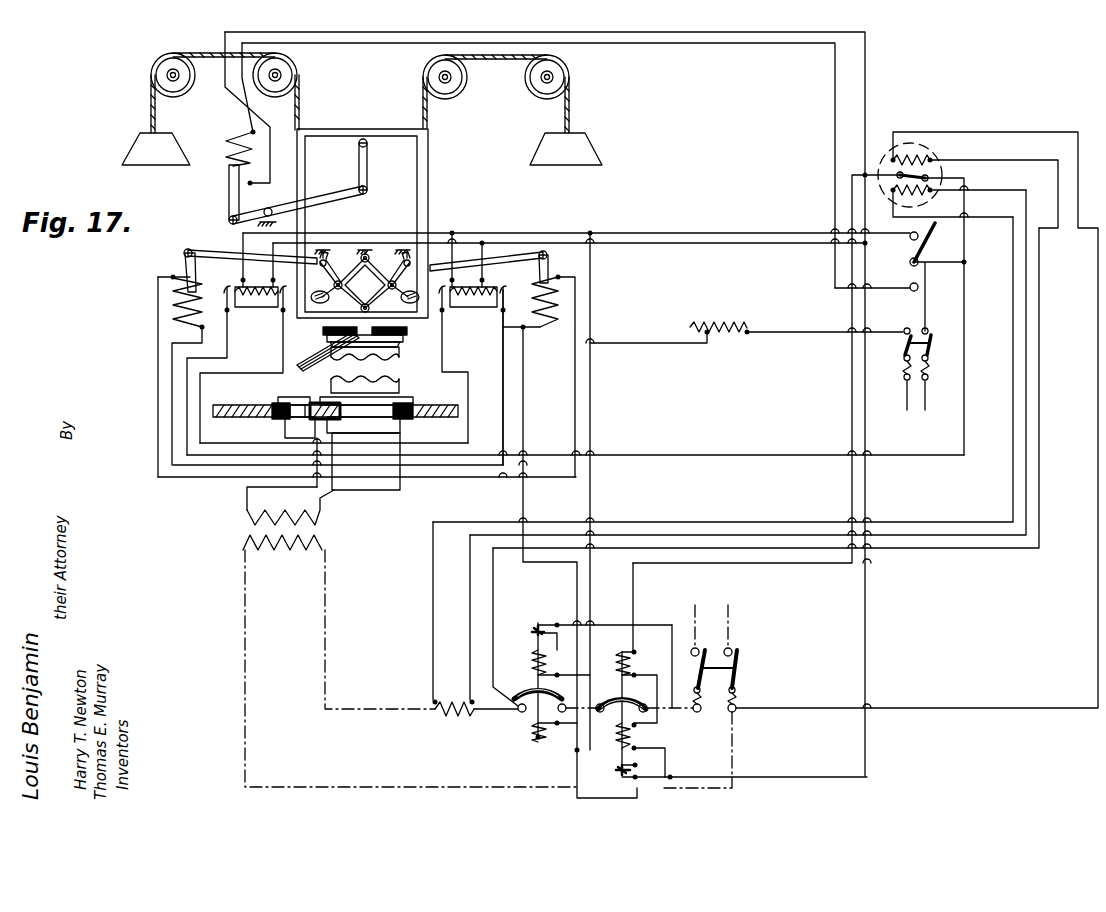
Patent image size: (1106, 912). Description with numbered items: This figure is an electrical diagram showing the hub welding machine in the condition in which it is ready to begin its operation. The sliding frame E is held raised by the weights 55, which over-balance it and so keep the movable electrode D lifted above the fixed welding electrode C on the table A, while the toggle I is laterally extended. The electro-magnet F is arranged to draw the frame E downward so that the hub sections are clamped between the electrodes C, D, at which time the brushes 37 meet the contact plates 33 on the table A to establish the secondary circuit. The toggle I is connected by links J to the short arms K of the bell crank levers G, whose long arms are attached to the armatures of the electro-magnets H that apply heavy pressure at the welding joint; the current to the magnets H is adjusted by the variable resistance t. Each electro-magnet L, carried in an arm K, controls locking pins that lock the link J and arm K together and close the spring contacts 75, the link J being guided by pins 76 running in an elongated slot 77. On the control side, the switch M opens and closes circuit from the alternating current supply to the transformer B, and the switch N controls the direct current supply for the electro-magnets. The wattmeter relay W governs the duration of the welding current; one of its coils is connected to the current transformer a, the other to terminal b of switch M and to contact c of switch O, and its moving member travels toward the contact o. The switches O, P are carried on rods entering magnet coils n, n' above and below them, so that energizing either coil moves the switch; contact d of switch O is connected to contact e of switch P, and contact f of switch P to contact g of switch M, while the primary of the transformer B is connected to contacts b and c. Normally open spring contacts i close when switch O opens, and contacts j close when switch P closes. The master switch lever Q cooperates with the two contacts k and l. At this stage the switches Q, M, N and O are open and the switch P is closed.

The weights 55 is at (362, 161).
The electro-magnet F is at (283, 129).
The sliding frame E is at (410, 205).
The bell crank lever G is at (366, 270).
The electro-magnet L is at (366, 270).
The short arm of bell crank lever K is at (336, 264).
The toggle I is at (365, 281).
The link J is at (396, 281).
The electro-magnet H is at (354, 376).
The spring contacts 75 is at (474, 320).
The pins 76 is at (327, 301).
The elongated slot 77 is at (403, 301).
The movable electrode D is at (371, 345).
The brushes 37 is at (324, 361).
The fixed welding electrode C is at (349, 389).
The contact plates 33 is at (284, 411).
The table A is at (335, 403).
The transformer B is at (410, 637).
The wattmeter relay W is at (810, 332).
The contact o is at (933, 170).
The contact k is at (906, 247).
The master or controlling switch lever Q is at (899, 277).
The contact l is at (876, 298).
The switch N is at (926, 369).
The variable resistance t is at (746, 321).
The spring contacts i is at (535, 612).
The switch O is at (585, 685).
The magnet coil n is at (546, 662).
The switch P is at (730, 726).
The contact c is at (514, 721).
The current transformer a is at (476, 722).
The contact d is at (560, 726).
The magnet coil n' is at (579, 750).
The contact e is at (599, 724).
The contact f is at (660, 723).
The contact g is at (702, 717).
The terminal b is at (741, 698).
The switch M is at (729, 668).
The spring contacts j is at (650, 783).